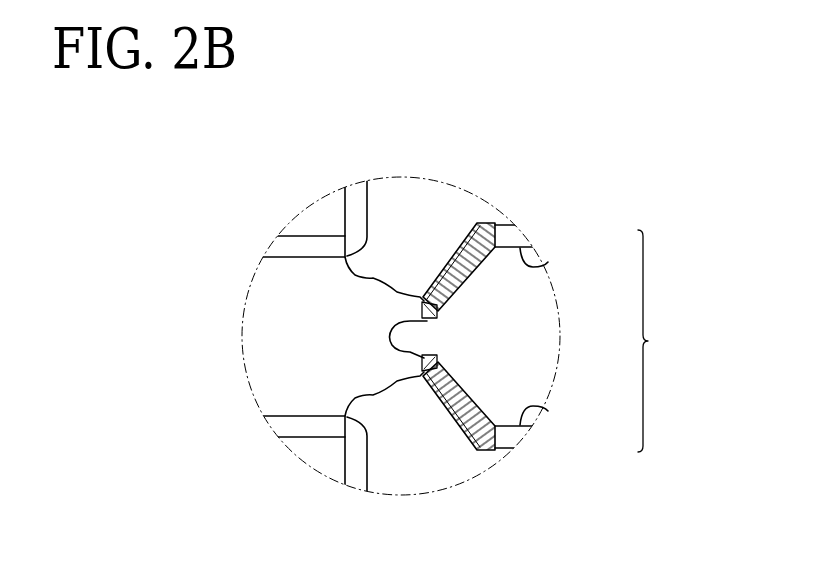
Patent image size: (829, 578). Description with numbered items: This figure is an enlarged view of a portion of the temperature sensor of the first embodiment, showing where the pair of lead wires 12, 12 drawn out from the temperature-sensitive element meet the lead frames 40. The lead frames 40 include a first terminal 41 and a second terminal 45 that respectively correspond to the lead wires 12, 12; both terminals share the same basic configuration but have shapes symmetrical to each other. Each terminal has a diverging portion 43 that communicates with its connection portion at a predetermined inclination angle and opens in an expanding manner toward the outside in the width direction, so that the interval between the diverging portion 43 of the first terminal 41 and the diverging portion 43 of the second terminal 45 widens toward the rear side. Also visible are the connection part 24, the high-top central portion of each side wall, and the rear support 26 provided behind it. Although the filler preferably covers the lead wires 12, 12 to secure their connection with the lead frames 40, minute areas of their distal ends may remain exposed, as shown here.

The lead wire 12 is at (436, 318).
The connection part 24 is at (312, 235).
The rear support 26 is at (369, 196).
The lead frames 40 is at (659, 341).
The first terminal 41 is at (548, 411).
The diverging portion 43 is at (462, 224).
The second terminal 45 is at (548, 262).